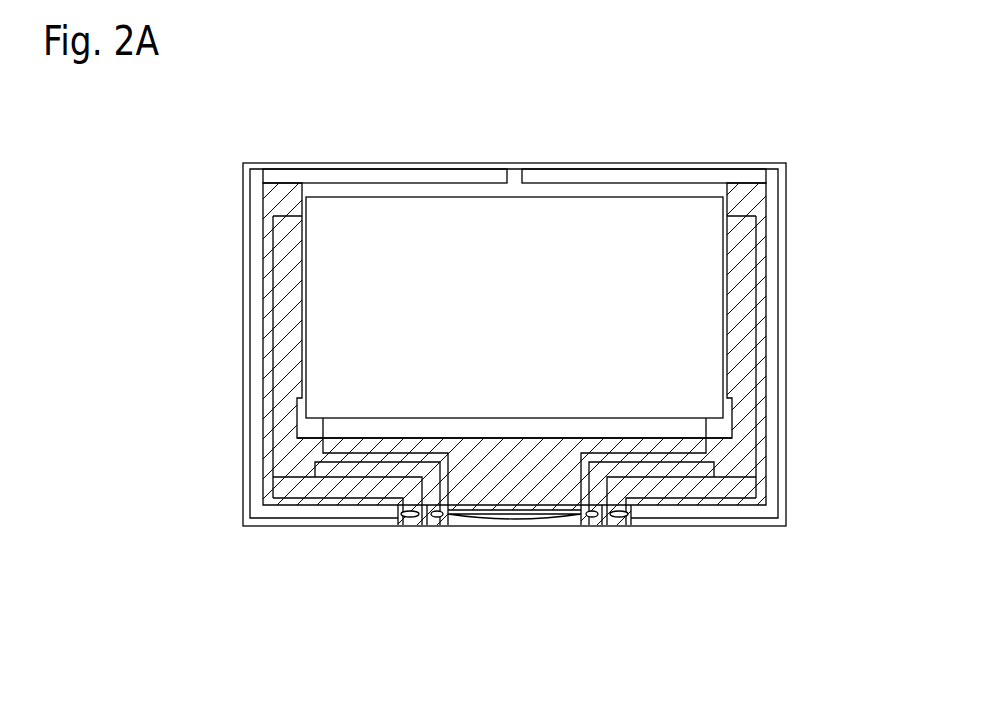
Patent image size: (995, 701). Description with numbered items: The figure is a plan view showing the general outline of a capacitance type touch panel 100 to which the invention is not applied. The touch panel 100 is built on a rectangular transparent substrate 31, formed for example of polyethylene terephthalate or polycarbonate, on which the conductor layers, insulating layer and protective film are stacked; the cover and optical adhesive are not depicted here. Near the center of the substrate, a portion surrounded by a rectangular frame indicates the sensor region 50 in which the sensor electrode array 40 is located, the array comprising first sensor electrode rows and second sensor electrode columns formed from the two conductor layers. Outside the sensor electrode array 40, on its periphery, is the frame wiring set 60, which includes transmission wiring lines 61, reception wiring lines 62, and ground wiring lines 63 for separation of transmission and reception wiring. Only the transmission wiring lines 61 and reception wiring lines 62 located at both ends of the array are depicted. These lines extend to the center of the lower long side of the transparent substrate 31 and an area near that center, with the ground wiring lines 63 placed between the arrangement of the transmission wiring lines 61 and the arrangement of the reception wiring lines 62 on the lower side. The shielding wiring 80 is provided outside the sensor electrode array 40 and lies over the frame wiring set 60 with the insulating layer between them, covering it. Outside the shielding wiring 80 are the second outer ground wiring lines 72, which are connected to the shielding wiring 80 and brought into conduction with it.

The touch panel 100 is at (258, 161).
The transparent substrate 31 is at (742, 527).
The sensor electrode array 40 is at (612, 220).
The sensor region 50 is at (424, 198).
The frame wiring set 60 is at (514, 530).
The transmission wiring lines 61 is at (514, 556).
The reception wiring lines 62 is at (410, 517).
The ground wiring lines for separation of transmission and reception wiring 63 is at (437, 517).
The second outer ground wiring lines 72 is at (252, 228).
The shielding wiring 80 is at (748, 195).